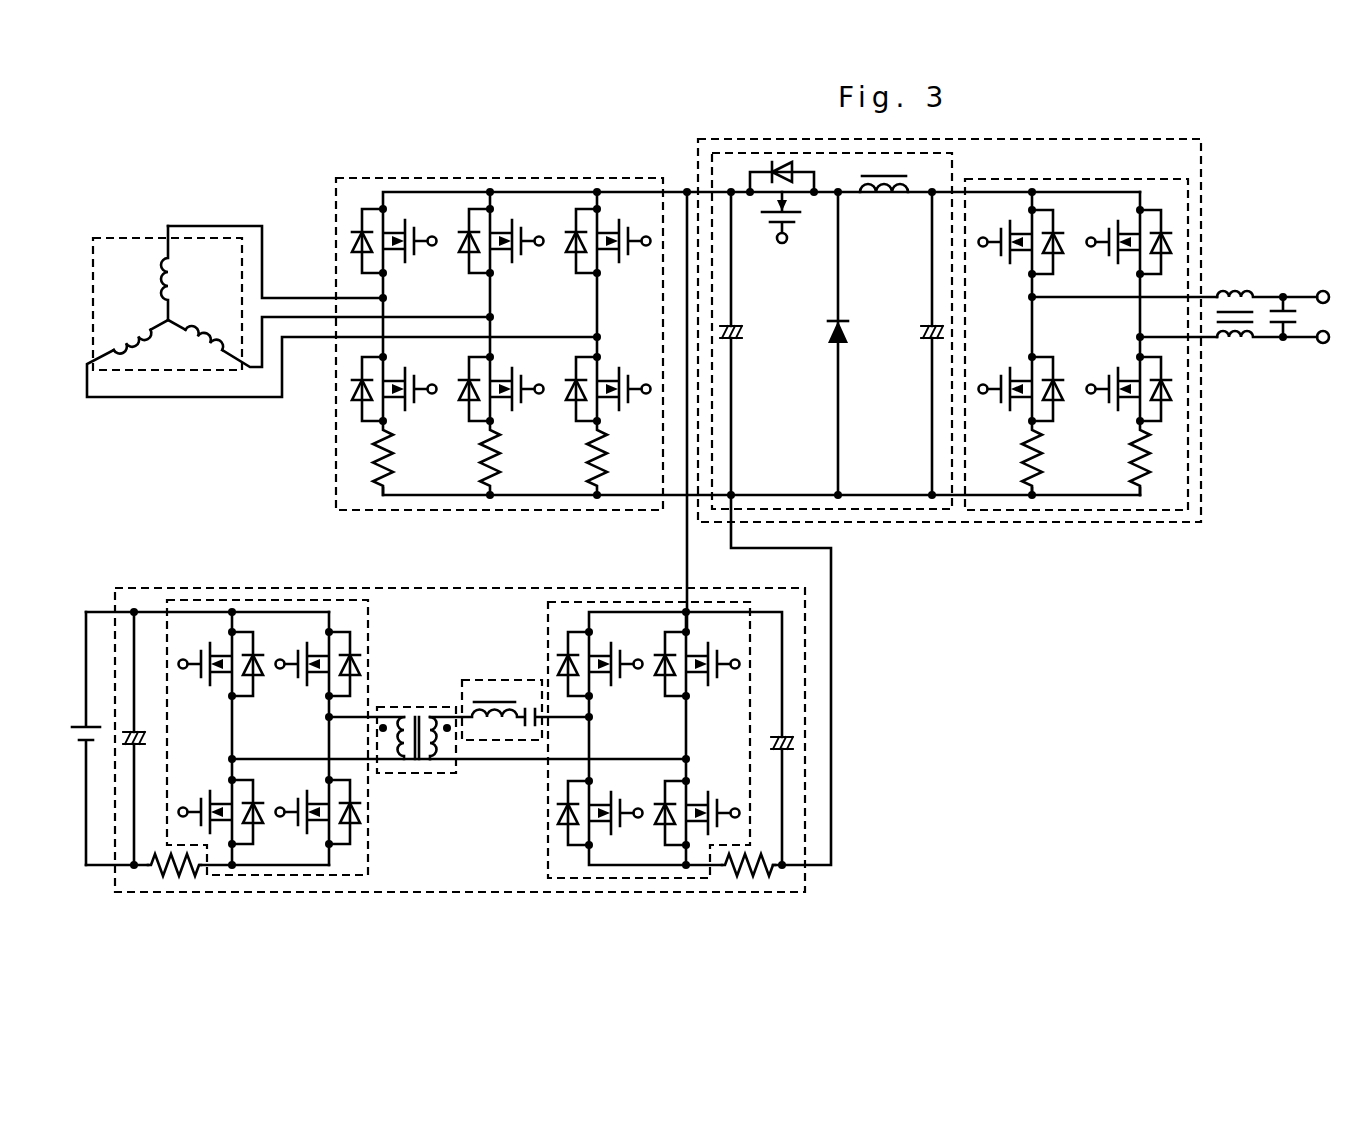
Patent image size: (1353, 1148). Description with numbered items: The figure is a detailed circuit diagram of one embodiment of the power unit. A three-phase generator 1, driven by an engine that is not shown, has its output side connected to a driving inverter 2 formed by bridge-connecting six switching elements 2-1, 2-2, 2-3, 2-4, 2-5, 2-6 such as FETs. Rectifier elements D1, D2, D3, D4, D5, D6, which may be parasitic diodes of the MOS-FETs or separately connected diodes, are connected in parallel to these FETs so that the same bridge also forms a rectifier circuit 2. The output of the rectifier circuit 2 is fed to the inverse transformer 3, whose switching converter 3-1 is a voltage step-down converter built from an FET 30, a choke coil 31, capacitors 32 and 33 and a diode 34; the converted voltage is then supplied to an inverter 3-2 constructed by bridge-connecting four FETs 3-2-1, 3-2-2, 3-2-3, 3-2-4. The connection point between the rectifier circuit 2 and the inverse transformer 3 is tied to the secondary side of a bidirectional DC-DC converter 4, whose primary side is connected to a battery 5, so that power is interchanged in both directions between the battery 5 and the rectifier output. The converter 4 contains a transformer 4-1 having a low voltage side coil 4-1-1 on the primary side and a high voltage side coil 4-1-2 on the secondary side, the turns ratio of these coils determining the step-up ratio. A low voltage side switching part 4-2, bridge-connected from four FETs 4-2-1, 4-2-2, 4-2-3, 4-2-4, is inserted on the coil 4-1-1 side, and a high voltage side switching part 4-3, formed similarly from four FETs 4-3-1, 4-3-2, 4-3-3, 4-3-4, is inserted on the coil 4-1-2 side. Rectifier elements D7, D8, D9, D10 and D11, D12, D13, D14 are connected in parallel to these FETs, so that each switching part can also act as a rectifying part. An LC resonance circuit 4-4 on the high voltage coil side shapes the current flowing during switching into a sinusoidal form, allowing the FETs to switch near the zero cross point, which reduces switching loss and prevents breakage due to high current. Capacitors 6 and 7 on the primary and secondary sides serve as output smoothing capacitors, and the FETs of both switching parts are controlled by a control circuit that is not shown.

The three-phase generator 1 is at (108, 237).
The driving inverter 2 is at (712, 344).
The switching element 2-1 is at (400, 212).
The switching element 2-2 is at (508, 212).
The switching element 2-3 is at (614, 212).
The switching element 2-4 is at (398, 410).
The switching element 2-5 is at (504, 410).
The switching element 2-6 is at (610, 410).
The rectifier element D1 is at (352, 242).
The rectifier element D2 is at (460, 262).
The rectifier element D3 is at (566, 262).
The rectifier element D4 is at (353, 408).
The rectifier element D5 is at (460, 410).
The rectifier element D6 is at (566, 410).
The inverse transformer 3 is at (1013, 351).
The switching converter 3-1 is at (832, 358).
The FET 30 is at (802, 203).
The choke coil 31 is at (890, 200).
The capacitor 32 is at (742, 347).
The capacitor 33 is at (920, 346).
The diode 34 is at (854, 348).
The inverter 3-2 is at (1112, 349).
The FET 3-2-1 is at (1010, 213).
The FET 3-2-2 is at (1115, 213).
The FET 3-2-3 is at (1010, 413).
The FET 3-2-4 is at (1118, 413).
The bidirectional DC-DC converter 4 is at (431, 736).
The transformer 4-1 is at (440, 746).
The low voltage side coil 4-1-1 is at (402, 773).
The high voltage side coil 4-1-2 is at (432, 773).
The low voltage side switching part 4-2 is at (294, 736).
The FET 4-2-1 is at (212, 632).
The FET 4-2-2 is at (308, 632).
The FET 4-2-3 is at (215, 840).
The FET 4-2-4 is at (313, 840).
The high voltage side switching part 4-3 is at (611, 736).
The FET 4-3-1 is at (607, 635).
The FET 4-3-2 is at (706, 635).
The FET 4-3-3 is at (607, 840).
The FET 4-3-4 is at (703, 840).
The LC resonance circuit 4-4 is at (488, 680).
The rectifier element D7 is at (263, 696).
The rectifier element D8 is at (367, 667).
The rectifier element D9 is at (270, 812).
The rectifier element D10 is at (360, 833).
The rectifier element D11 is at (552, 663).
The rectifier element D12 is at (657, 685).
The rectifier element D13 is at (550, 815).
The rectifier element D14 is at (655, 808).
The battery 5 is at (80, 718).
The capacitor 6 is at (140, 727).
The capacitor 7 is at (768, 728).